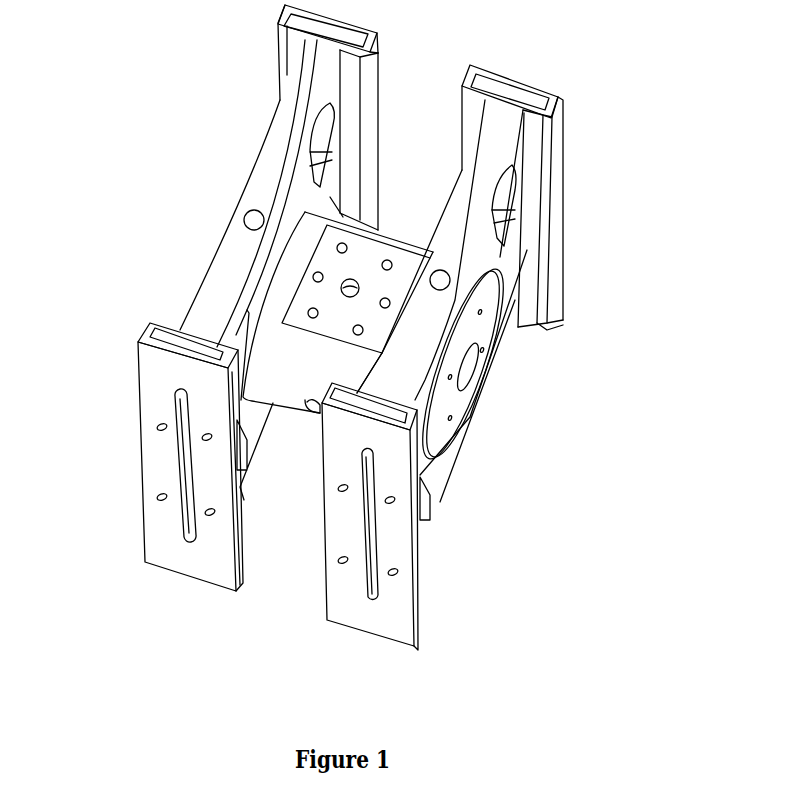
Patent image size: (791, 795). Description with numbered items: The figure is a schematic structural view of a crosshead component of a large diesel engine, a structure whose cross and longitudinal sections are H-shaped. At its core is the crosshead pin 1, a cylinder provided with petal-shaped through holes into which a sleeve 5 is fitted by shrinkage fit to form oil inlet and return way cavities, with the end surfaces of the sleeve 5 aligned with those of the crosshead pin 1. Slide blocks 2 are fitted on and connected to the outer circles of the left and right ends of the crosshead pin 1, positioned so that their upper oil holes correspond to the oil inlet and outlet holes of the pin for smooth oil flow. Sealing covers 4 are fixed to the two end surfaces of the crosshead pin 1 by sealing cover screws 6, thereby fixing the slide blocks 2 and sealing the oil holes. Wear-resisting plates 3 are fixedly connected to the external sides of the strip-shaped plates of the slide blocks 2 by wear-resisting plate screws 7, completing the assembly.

The crosshead pin 1 is at (335, 275).
The slide block 2 is at (205, 307).
The wear-resisting plate 3 is at (202, 463).
The sealing cover 4 is at (515, 380).
The sleeve 5 is at (580, 373).
The sealing cover screw 6 is at (450, 418).
The wear-resisting plate screw 7 is at (393, 572).